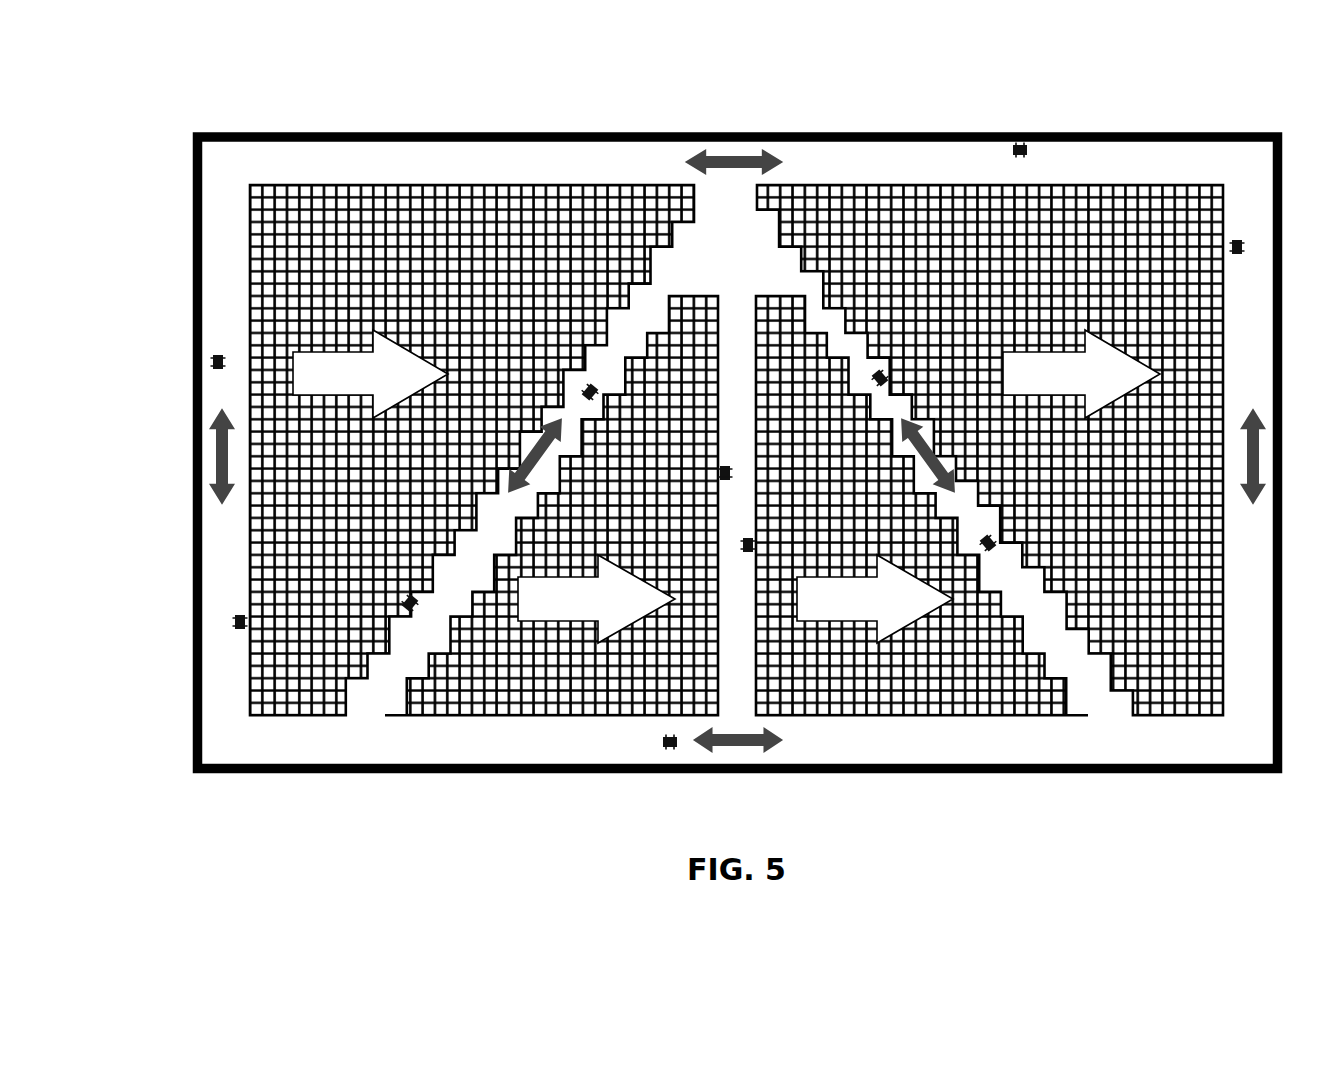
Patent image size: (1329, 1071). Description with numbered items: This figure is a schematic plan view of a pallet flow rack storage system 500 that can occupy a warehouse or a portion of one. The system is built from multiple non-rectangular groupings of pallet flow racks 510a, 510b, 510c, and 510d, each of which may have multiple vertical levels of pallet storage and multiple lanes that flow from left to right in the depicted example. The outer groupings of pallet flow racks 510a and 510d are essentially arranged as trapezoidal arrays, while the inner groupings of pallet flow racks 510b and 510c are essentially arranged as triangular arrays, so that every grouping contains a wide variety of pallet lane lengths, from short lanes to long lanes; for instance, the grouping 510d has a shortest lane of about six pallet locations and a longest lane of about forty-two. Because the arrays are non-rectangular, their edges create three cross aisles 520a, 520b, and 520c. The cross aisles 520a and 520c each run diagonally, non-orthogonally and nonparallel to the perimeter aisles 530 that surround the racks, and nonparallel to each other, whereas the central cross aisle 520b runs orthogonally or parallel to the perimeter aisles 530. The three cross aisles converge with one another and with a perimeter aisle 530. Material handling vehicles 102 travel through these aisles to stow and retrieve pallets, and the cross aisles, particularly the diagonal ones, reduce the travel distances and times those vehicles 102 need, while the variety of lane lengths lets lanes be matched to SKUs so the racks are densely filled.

The pallet flow rack storage system 500 is at (319, 108).
The material handling vehicle 102 is at (1033, 150).
The grouping of pallet flow racks 510a is at (265, 715).
The grouping of pallet flow racks 510b is at (480, 715).
The grouping of pallet flow racks 510c is at (1030, 715).
The grouping of pallet flow racks 510d is at (1195, 715).
The cross aisle 520a is at (385, 650).
The cross aisle 520b is at (738, 665).
The cross aisle 520c is at (1060, 614).
The perimeter aisle 530 is at (590, 162).